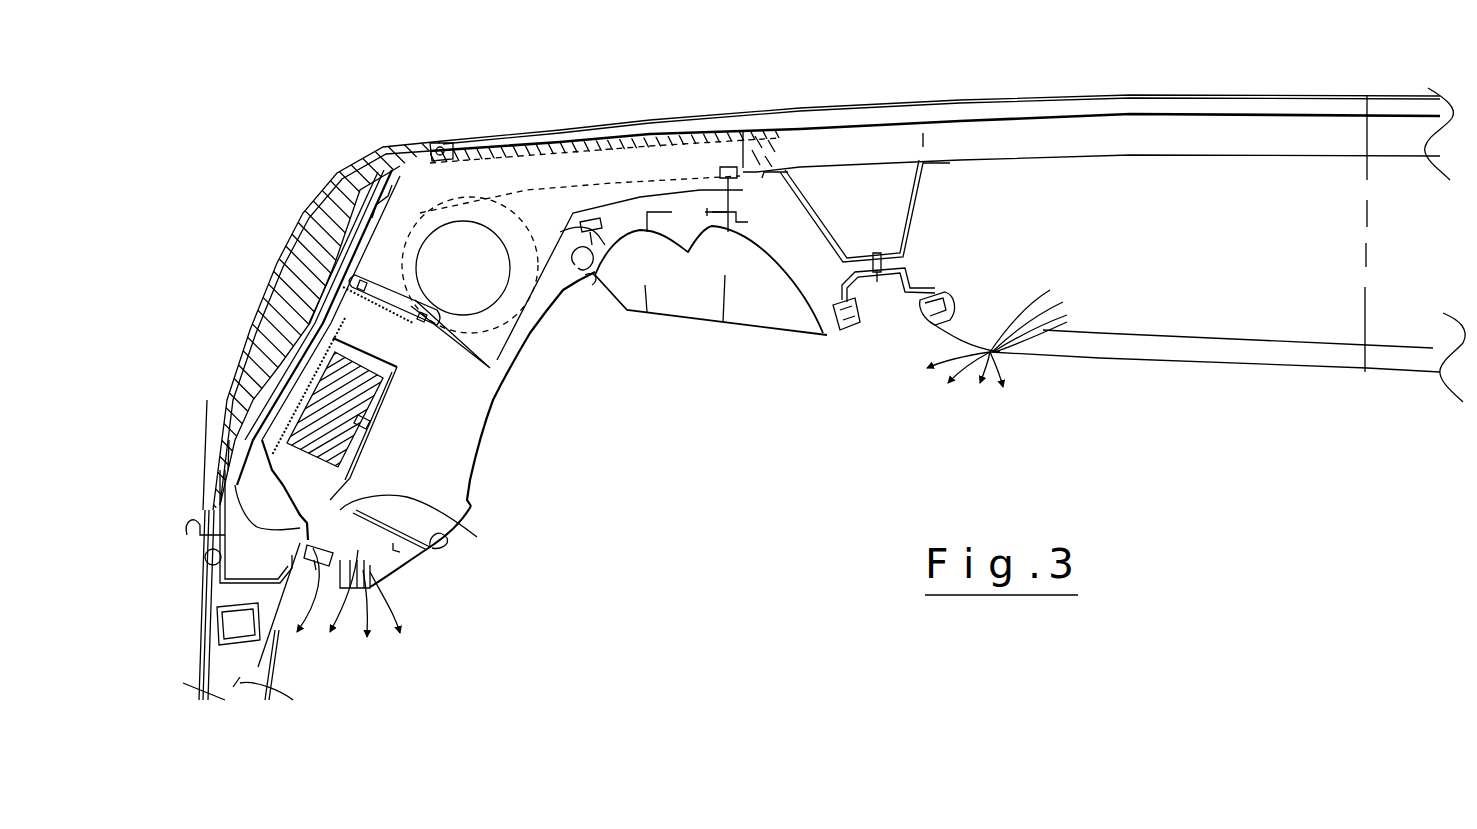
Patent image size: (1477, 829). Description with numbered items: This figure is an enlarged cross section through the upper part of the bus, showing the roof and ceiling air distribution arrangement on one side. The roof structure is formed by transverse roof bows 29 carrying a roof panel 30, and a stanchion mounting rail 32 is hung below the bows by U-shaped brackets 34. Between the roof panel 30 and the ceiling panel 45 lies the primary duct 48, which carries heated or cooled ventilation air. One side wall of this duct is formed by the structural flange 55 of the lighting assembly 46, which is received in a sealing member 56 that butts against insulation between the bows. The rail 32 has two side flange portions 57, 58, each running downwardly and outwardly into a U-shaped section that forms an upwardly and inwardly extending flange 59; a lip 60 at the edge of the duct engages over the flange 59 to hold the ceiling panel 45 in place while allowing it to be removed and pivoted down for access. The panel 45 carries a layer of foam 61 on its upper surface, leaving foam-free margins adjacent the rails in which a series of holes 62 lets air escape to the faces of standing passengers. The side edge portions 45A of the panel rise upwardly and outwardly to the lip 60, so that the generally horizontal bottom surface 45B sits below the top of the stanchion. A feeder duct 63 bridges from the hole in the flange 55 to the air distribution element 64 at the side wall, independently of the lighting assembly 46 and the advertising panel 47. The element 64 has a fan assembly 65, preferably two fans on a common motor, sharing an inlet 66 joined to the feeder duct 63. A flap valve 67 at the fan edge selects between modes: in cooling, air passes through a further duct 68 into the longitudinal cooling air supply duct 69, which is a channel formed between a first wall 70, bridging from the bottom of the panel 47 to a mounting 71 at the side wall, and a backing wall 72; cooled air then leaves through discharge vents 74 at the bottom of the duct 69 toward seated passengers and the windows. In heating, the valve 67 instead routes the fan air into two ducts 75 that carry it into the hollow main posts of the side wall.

The roof bows 29 is at (1073, 140).
The roof panel 30 is at (953, 113).
The stanchion mounting rail 32 is at (912, 273).
The U-shaped bracket 34 is at (925, 203).
The ceiling panel 45 is at (1187, 365).
The side edge portions 45A is at (972, 338).
The bottom surface 45B is at (1300, 368).
The lighting assembly 46 is at (752, 325).
The advertising panel 47 is at (512, 373).
The primary duct 48 is at (1166, 286).
The structural flange 55 is at (740, 200).
The sealing member 56 is at (735, 170).
The side flange portion 57 is at (955, 322).
The side flange portion 58 is at (830, 302).
The upwardly and inwardly extending flange 59 is at (923, 298).
The lip 60 is at (926, 296).
The layer of foam 61 is at (1217, 353).
The holes 62 is at (993, 350).
The feeder duct 63 is at (637, 197).
The air distribution element 64 is at (318, 316).
The fan assembly 65 is at (303, 363).
The inlet 66 is at (400, 340).
The flap valve 67 is at (290, 490).
The further duct 68 is at (347, 503).
The cooling air supply duct 69 is at (442, 547).
The first wall 70 is at (378, 560).
The mounting 71 is at (337, 557).
The backing wall 72 is at (472, 512).
The discharge vents 74 is at (365, 585).
The ducts 75 is at (232, 495).